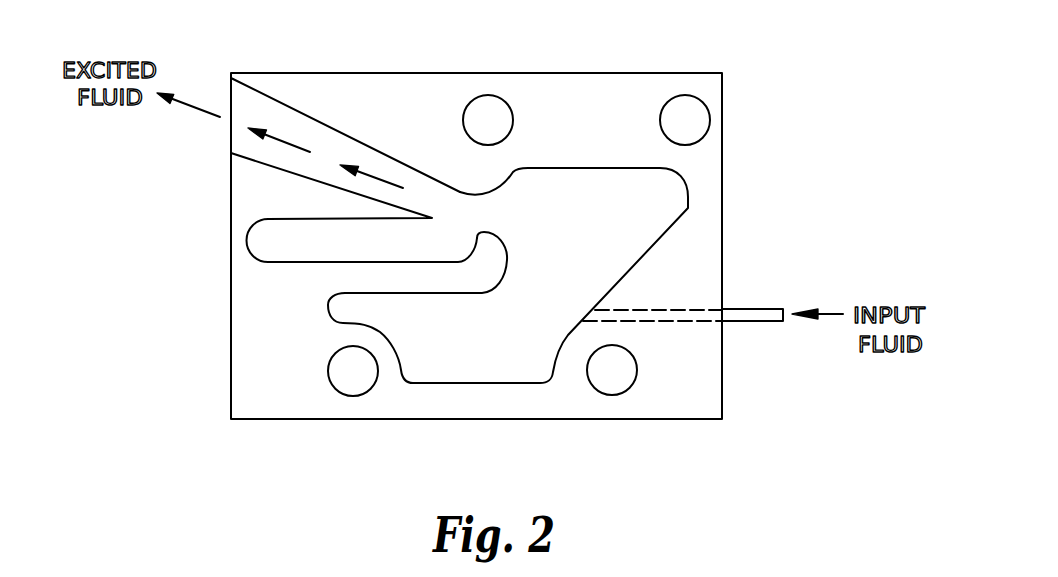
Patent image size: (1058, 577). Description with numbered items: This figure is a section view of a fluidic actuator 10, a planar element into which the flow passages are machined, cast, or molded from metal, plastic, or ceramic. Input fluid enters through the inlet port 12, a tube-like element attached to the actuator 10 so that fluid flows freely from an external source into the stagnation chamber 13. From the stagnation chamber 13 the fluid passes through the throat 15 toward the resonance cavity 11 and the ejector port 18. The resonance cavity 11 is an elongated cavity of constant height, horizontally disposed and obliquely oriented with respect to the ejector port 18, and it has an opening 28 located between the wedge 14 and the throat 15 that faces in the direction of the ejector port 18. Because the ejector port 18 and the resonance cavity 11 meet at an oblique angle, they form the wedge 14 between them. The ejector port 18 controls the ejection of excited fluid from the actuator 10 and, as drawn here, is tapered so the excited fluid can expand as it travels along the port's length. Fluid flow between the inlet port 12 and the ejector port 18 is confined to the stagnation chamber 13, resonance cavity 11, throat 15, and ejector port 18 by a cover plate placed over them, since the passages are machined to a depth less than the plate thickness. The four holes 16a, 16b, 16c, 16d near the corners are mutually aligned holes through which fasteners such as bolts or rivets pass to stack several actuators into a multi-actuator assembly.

The actuator 10 is at (740, 128).
The resonance cavity 11 is at (263, 242).
The inlet port 12 is at (752, 321).
The stagnation chamber 13 is at (660, 200).
The wedge 14 is at (327, 197).
The throat 15 is at (487, 213).
The hole 16a is at (683, 120).
The hole 16b is at (488, 118).
The hole 16c is at (353, 372).
The hole 16d is at (612, 372).
The ejector port 18 is at (267, 105).
The opening 28 is at (457, 223).